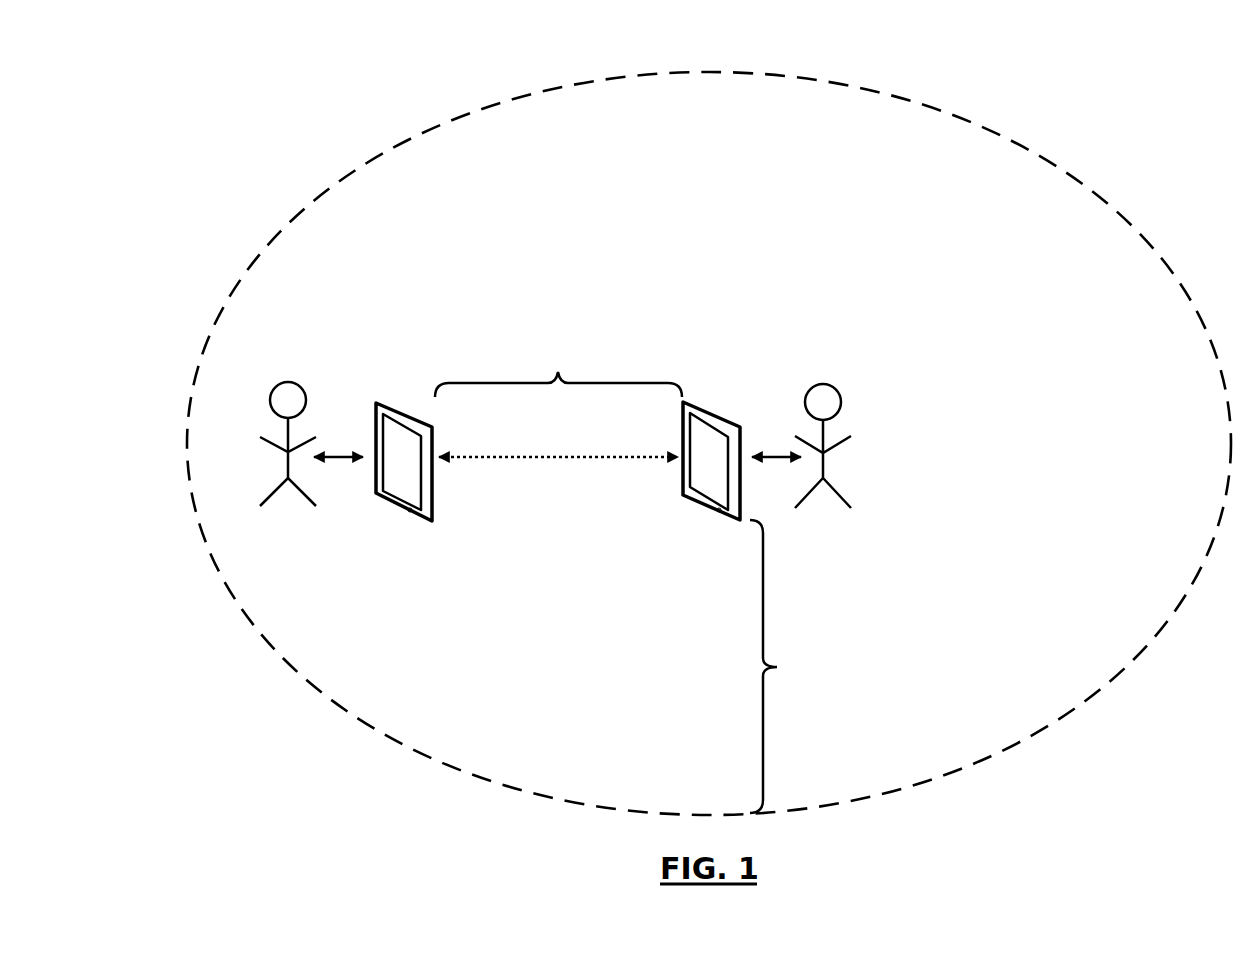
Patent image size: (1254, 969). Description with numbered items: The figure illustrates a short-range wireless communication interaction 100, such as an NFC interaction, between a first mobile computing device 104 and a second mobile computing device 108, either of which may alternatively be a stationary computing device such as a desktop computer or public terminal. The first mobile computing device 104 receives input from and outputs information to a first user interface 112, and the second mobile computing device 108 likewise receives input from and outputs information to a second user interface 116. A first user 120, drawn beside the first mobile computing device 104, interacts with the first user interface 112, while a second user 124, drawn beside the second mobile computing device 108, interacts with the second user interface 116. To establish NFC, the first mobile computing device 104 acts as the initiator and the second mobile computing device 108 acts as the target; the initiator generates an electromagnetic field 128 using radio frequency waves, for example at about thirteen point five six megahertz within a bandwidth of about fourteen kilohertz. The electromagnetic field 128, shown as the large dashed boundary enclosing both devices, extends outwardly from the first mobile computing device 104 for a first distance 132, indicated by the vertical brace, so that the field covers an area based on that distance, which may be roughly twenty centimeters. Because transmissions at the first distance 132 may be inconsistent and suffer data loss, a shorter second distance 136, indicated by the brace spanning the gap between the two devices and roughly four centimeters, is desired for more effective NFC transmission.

The short-range wireless communication interaction 100 is at (220, 70).
The first mobile computing device 104 is at (414, 454).
The second mobile computing device 108 is at (711, 453).
The first user interface 112 is at (410, 483).
The second user interface 116 is at (705, 482).
The first user 120 is at (305, 528).
The second user 124 is at (845, 362).
The electromagnetic field 128 is at (720, 72).
The first distance 132 is at (787, 666).
The second distance 136 is at (558, 402).